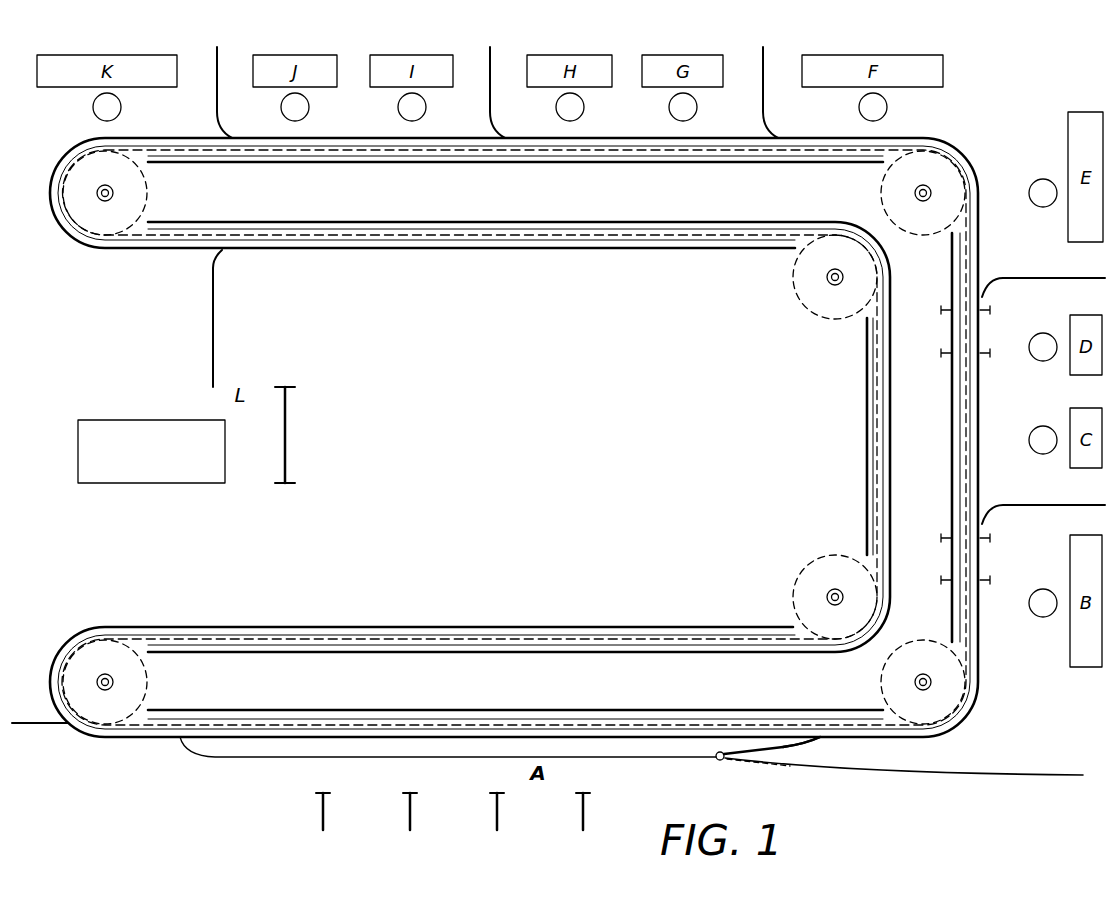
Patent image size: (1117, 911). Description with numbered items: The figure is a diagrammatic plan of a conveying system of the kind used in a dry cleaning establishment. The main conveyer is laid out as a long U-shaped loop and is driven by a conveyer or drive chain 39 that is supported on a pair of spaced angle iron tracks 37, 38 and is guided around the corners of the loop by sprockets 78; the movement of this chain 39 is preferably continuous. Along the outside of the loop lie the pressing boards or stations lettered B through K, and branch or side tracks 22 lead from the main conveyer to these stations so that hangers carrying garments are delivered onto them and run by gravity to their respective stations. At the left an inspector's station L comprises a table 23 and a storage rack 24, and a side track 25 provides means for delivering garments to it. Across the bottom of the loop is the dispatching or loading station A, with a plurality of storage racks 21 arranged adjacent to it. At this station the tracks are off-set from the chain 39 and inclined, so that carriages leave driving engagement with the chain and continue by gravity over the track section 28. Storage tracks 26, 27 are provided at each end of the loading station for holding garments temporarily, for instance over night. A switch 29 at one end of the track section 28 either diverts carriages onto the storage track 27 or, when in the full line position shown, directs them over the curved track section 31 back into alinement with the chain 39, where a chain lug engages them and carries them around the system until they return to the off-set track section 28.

The storage racks 21 is at (410, 818).
The branch or side tracks 22 is at (220, 62).
The table 23 is at (151, 451).
The storage rack 24 is at (287, 440).
The side track 25 is at (212, 338).
The storage track 26 is at (28, 722).
The storage track 27 is at (968, 775).
The track section 28 is at (250, 760).
The switch 29 is at (763, 758).
The curved track section 31 is at (815, 742).
The angle iron track 37 is at (676, 163).
The angle iron track 38 is at (624, 138).
The drive chain 39 is at (707, 722).
The sprockets 78 is at (150, 186).